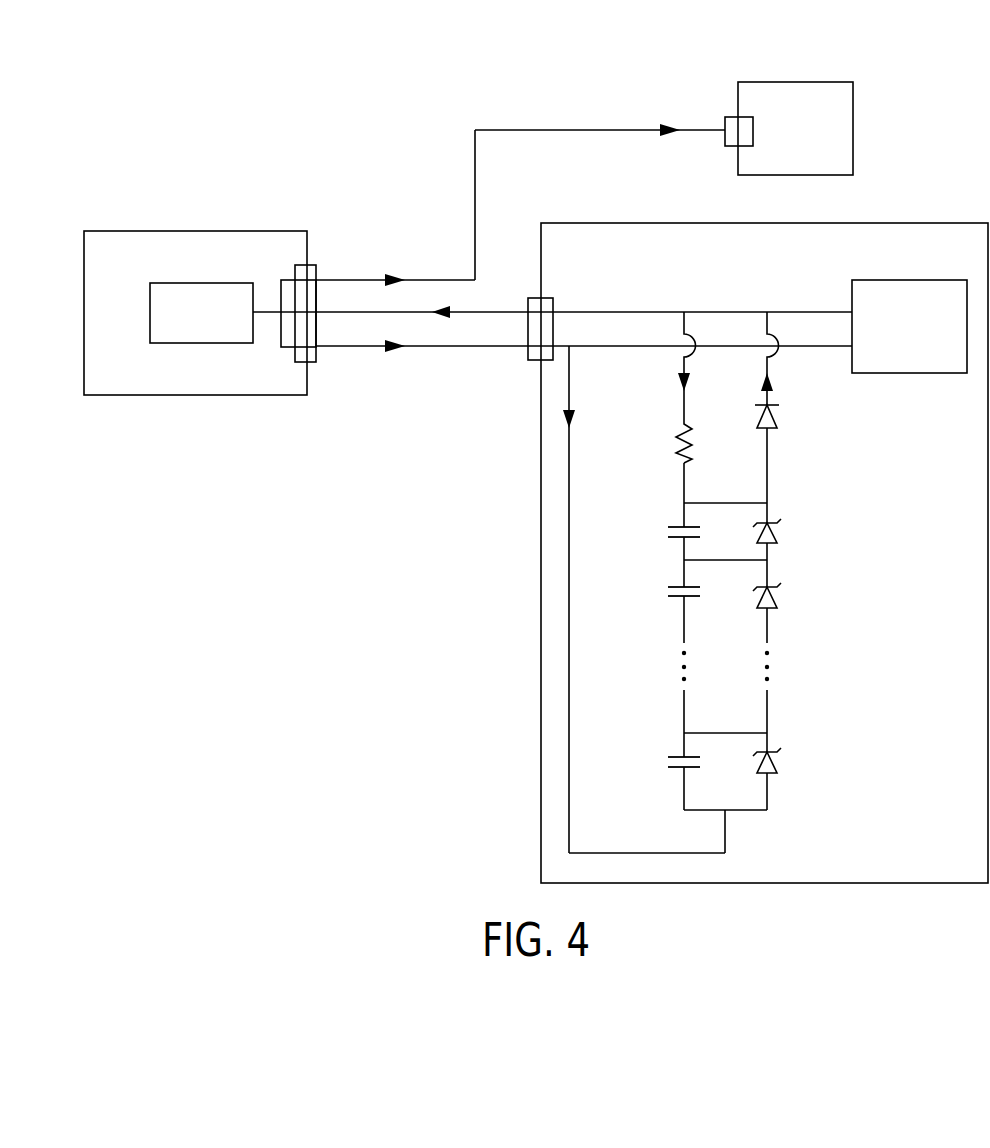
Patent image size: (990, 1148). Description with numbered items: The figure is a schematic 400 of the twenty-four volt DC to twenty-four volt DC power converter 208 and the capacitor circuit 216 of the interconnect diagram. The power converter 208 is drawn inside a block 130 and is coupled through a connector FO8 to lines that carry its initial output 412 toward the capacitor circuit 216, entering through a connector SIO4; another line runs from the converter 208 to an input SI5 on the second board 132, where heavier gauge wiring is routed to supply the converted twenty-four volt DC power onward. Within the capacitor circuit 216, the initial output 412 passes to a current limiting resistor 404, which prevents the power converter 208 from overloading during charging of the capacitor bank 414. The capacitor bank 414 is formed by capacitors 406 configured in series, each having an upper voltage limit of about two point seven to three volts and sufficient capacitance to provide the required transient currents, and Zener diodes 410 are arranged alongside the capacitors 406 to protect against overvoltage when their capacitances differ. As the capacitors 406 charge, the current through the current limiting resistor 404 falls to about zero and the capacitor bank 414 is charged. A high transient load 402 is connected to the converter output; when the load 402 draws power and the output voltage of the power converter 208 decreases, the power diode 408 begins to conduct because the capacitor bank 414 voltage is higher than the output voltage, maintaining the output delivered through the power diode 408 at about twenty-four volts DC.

The schematic 400 is at (218, 146).
The controller unit 130 is at (125, 277).
The 24V DC/24V DC power converter 208 is at (218, 329).
The fiber optic connector FO8 is at (318, 276).
The initial output 412 is at (396, 354).
The input SI5 is at (733, 117).
The second board 132 is at (812, 142).
The capacitor circuit 216 is at (983, 871).
The signal input/output connector SIO4 is at (528, 350).
The high transient load 402 is at (926, 339).
The current limiting resistor 404 is at (676, 440).
The capacitors 406 is at (673, 524).
The power diode 408 is at (772, 416).
The Zener diodes 410 is at (775, 533).
The capacitor bank 414 is at (645, 498).